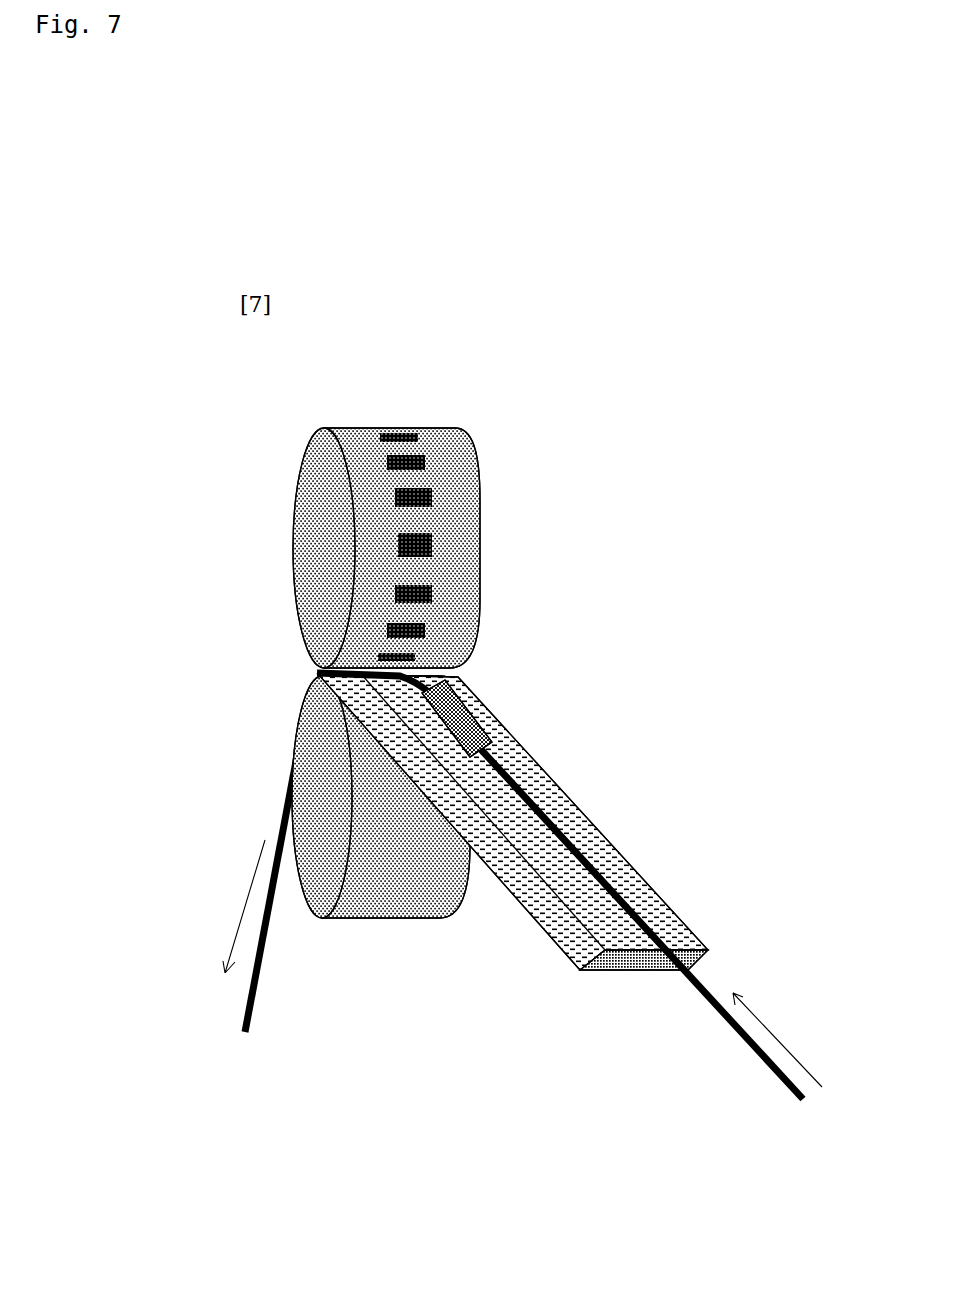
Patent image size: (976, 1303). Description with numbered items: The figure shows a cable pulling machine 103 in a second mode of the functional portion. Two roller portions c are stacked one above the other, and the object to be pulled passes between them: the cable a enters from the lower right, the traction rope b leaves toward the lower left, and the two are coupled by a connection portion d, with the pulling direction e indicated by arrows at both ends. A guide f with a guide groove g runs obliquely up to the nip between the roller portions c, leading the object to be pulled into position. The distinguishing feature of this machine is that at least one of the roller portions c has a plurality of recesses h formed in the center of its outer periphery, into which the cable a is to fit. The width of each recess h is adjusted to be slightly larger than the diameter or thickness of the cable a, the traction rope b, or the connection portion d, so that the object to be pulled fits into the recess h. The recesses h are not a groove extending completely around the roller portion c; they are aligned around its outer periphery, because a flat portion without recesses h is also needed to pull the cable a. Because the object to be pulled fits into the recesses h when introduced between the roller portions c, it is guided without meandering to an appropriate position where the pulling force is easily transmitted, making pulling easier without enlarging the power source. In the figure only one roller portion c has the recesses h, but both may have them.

The cable pulling machine 103 is at (468, 412).
The cable a is at (720, 1014).
The traction rope b is at (242, 1026).
The roller portion c is at (322, 430).
The connection portion d is at (470, 713).
The pulling direction e is at (252, 905).
The guide f is at (670, 920).
The guide groove g is at (513, 822).
The recess h is at (432, 498).